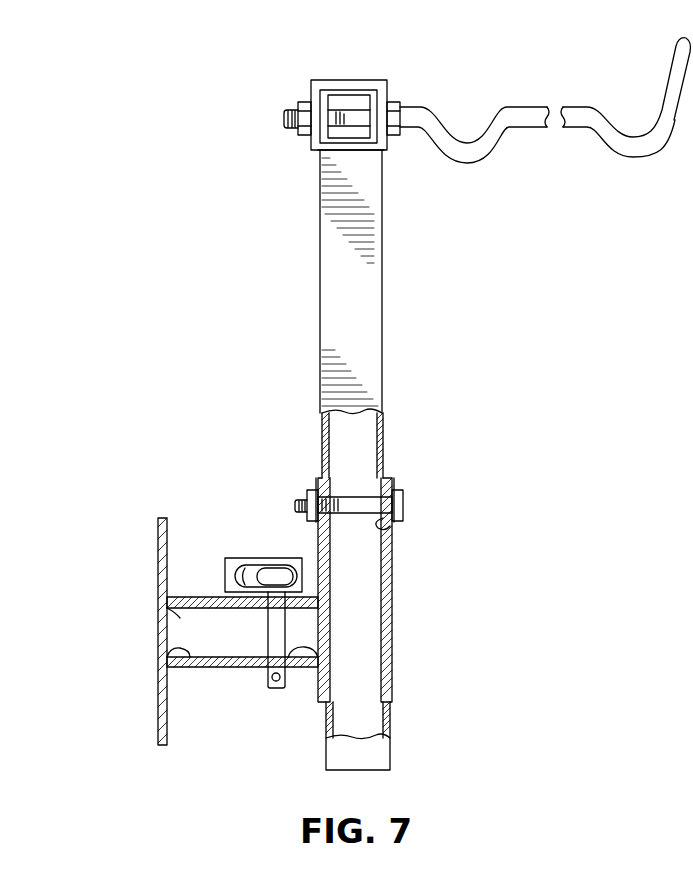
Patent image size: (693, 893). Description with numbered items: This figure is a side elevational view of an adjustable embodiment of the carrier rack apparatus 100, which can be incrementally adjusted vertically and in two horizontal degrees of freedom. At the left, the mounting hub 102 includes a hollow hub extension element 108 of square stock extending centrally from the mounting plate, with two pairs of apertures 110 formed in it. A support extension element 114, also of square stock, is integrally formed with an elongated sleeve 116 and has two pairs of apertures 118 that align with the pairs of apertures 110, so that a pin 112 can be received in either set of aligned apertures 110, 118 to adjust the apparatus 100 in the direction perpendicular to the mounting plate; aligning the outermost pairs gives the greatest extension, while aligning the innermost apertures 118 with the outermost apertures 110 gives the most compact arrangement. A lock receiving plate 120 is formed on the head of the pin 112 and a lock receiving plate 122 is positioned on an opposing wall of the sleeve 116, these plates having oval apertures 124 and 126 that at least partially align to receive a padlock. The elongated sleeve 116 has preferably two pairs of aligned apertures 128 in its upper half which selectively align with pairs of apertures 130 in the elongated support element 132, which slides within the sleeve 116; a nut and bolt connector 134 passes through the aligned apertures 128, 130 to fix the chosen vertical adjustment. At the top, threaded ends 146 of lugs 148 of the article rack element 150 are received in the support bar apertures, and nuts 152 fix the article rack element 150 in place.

The carrier rack apparatus 100 is at (446, 320).
The mounting hub 102 is at (170, 508).
The hub extension element 108 is at (195, 667).
The apertures 110 is at (216, 597).
The pin 112 is at (272, 688).
The support extension element 114 is at (162, 648).
The elongated sleeve 116 is at (392, 633).
The apertures 118 is at (205, 608).
The lock receiving plate 120 is at (241, 558).
The lock receiving plate 122 is at (305, 558).
The oval aperture 124 is at (236, 558).
The oval aperture 126 is at (265, 582).
The aligned apertures 128 is at (386, 530).
The apertures 130 is at (385, 438).
The elongated support element 132 is at (320, 290).
The nut and bolt connector 134 is at (398, 500).
The threaded ends 146 is at (285, 118).
The lugs 148 is at (420, 112).
The article rack element 150 is at (564, 89).
The nuts 152 is at (305, 98).